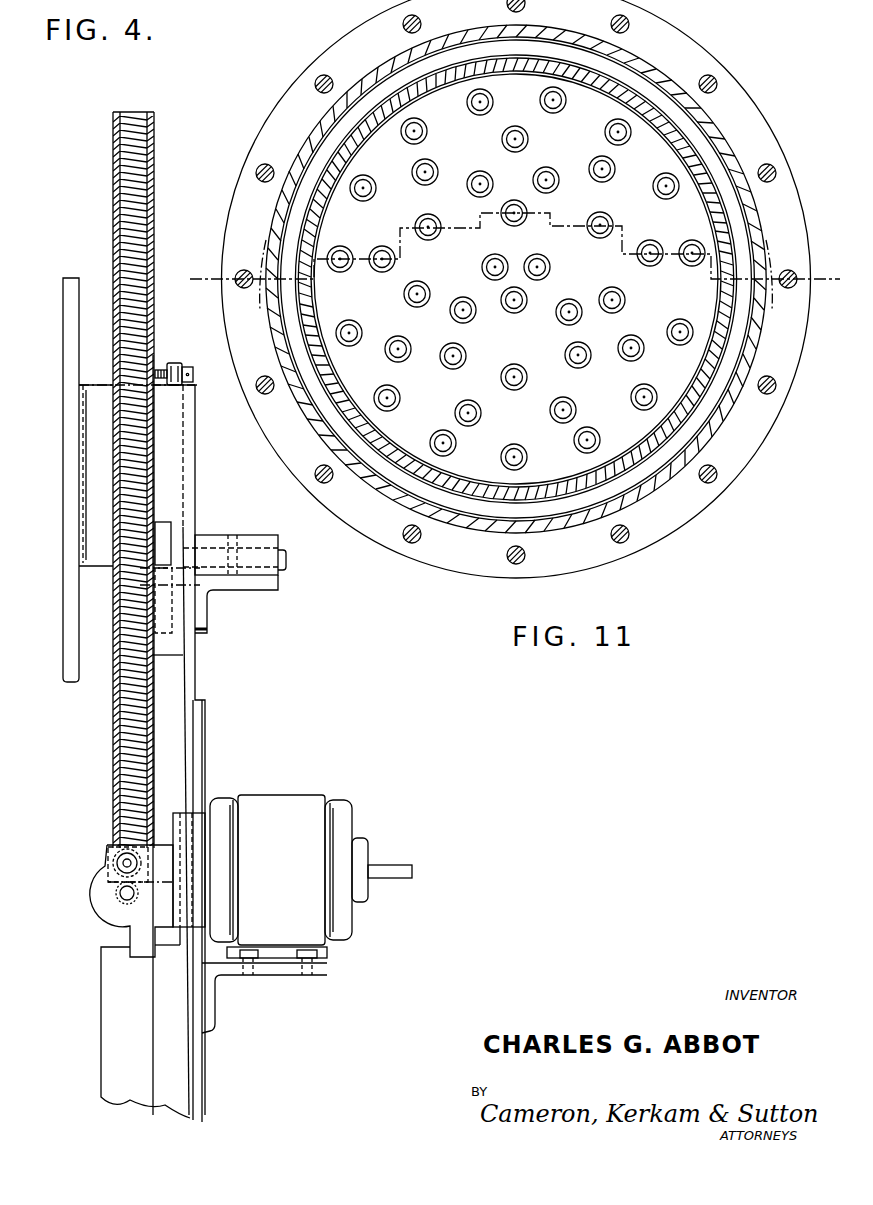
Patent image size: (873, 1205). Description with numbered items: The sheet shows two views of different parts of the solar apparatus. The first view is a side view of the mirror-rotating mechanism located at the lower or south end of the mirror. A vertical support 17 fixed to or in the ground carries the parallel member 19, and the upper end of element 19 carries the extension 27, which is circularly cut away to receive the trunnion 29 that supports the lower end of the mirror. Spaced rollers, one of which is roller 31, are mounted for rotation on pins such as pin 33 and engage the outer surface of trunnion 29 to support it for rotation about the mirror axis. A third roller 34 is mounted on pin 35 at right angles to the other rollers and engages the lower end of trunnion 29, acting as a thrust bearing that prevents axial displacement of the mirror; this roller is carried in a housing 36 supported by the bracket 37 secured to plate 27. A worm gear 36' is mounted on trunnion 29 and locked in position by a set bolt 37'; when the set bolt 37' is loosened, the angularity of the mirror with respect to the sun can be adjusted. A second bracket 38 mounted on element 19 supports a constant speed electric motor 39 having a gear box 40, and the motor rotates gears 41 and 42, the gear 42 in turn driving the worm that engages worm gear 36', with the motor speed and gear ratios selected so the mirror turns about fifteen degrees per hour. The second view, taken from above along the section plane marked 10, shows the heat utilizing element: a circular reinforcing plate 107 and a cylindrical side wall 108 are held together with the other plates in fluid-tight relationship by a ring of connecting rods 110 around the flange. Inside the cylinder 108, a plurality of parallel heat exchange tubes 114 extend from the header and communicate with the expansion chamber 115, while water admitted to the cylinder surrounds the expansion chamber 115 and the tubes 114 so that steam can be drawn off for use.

In FIG. 11, the section line plane 10 is at (197, 284).
In FIG. 4, the vertical support 17 is at (140, 1090).
In FIG. 4, the parallel member 19 is at (200, 758).
In FIG. 4, the extension 27 is at (188, 672).
In FIG. 4, the trunnion 29 is at (92, 385).
In FIG. 4, the roller 31 is at (163, 524).
In FIG. 4, the pin 33 is at (175, 590).
In FIG. 4, the third roller 34 is at (288, 558).
In FIG. 4, the pin 35 is at (238, 542).
In FIG. 4, the housing 36 is at (241, 540).
In FIG. 4, the worm gear 36' is at (154, 480).
In FIG. 4, the bracket 37 is at (247, 604).
In FIG. 4, the set bolt 37' is at (193, 363).
In FIG. 4, the second bracket 38 is at (213, 1000).
In FIG. 4, the constant speed electric motor 39 is at (312, 812).
In FIG. 4, the gear box 40 is at (132, 915).
In FIG. 4, the gear 41 is at (119, 896).
In FIG. 4, the gear 42 is at (117, 866).
In FIG. 11, the circular reinforcing plate 107 is at (682, 528).
In FIG. 11, the cylindrical side wall 108 is at (566, 515).
In FIG. 11, the connecting rods 110 is at (316, 86).
In FIG. 11, the heat exchange tubes 114 is at (606, 135).
In FIG. 11, the expansion chamber 115 is at (467, 490).